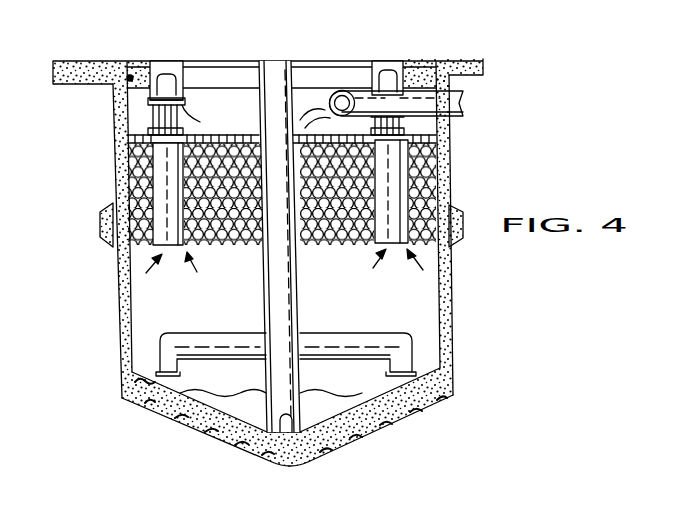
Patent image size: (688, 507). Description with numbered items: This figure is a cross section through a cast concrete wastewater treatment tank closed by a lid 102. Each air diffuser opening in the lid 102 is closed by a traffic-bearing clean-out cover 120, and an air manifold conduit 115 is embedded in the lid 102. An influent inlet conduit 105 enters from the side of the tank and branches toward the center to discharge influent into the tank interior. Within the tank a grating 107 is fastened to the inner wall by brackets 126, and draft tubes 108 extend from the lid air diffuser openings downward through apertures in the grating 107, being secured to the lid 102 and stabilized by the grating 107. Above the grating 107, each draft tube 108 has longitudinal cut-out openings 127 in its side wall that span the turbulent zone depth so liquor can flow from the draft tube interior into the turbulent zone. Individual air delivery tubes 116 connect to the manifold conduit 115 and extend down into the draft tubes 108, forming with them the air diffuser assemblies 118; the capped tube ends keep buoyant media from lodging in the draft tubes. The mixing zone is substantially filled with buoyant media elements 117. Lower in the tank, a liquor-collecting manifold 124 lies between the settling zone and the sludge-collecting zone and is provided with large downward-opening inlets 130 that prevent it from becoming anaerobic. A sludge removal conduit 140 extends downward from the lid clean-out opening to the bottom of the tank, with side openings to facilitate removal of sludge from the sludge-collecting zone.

The lid 102 is at (123, 62).
The influent inlet conduit 105 is at (469, 103).
The grating 107 is at (226, 136).
The draft tubes 108 is at (156, 256).
The manifold conduit 115 is at (131, 76).
The air delivery tubes 116 is at (168, 246).
The buoyant media elements 117 is at (314, 248).
The air diffuser assemblies 118 is at (184, 249).
The clean-out cover 120 is at (168, 62).
The liquor-collecting manifold 124 is at (356, 333).
The brackets 126 is at (127, 160).
The longitudinal cut-out openings 127 is at (152, 120).
The downward-opening inlets 130 is at (165, 402).
The sludge removal conduit 140 is at (270, 293).